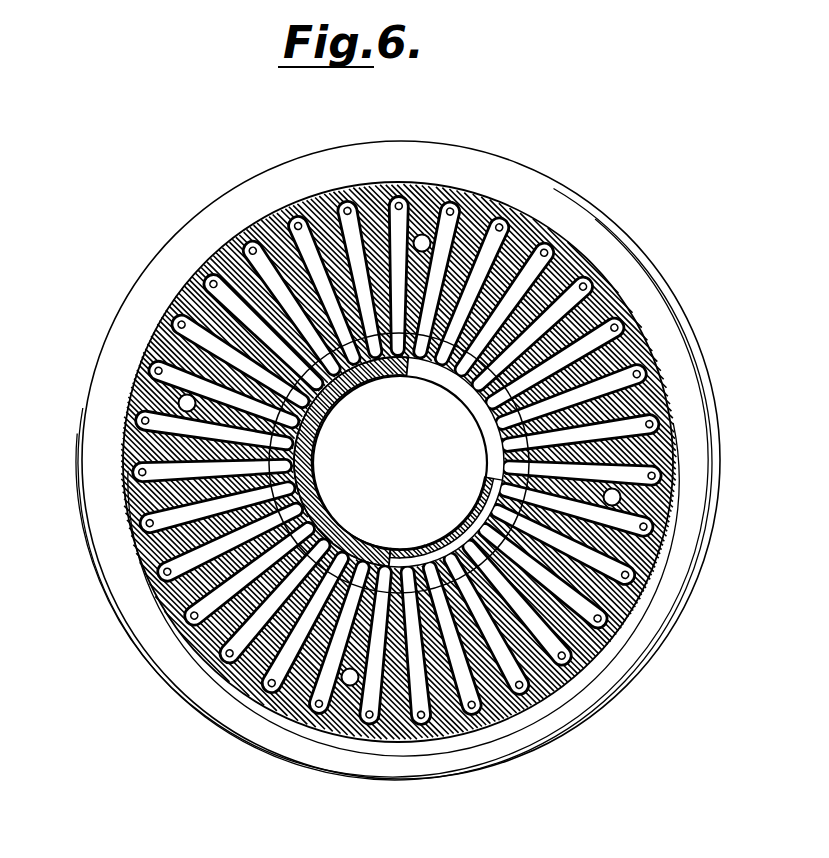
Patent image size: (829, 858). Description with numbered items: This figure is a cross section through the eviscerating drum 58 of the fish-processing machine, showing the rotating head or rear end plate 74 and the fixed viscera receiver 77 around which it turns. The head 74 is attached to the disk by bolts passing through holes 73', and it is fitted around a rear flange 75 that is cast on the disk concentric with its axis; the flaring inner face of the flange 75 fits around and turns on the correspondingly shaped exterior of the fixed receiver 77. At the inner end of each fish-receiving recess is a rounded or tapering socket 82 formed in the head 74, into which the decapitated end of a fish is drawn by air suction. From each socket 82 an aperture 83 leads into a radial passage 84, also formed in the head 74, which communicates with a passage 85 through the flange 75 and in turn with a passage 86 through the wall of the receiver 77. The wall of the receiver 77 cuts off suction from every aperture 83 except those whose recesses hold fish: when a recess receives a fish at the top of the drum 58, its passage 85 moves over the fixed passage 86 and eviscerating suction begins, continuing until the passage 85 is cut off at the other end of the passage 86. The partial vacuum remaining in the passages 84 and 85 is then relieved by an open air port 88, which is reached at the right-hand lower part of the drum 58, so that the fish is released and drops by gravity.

The drum 58 is at (393, 498).
The holes 73' is at (314, 460).
The head or rear end plate 74 is at (216, 199).
The rear flange 75 is at (292, 482).
The viscera receiver 77 is at (315, 443).
The socket 82 is at (295, 200).
The aperture 83 is at (425, 200).
The radial passage 84 is at (447, 242).
The passage 85 is at (427, 343).
The passage 86 is at (465, 388).
The open air port 88 is at (428, 545).